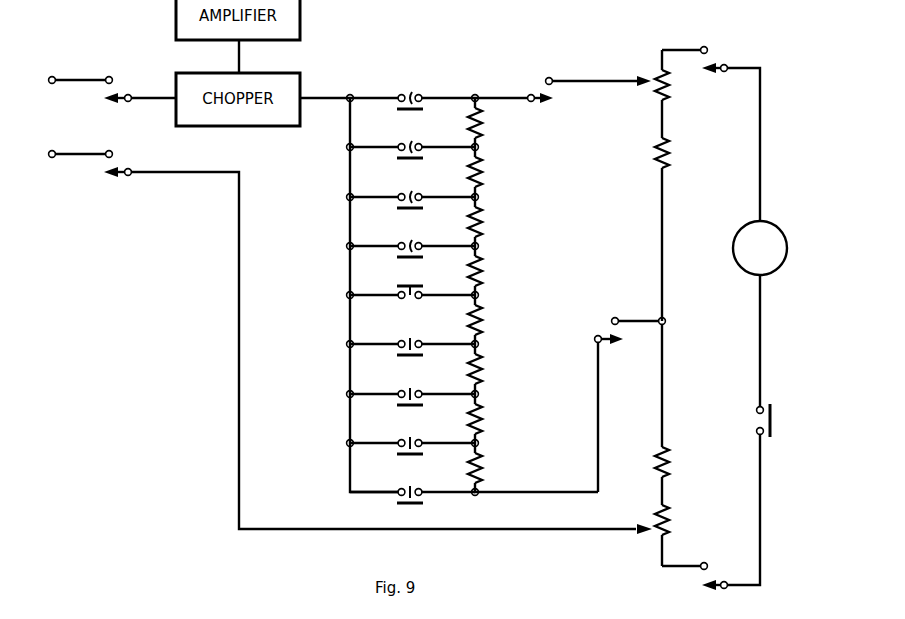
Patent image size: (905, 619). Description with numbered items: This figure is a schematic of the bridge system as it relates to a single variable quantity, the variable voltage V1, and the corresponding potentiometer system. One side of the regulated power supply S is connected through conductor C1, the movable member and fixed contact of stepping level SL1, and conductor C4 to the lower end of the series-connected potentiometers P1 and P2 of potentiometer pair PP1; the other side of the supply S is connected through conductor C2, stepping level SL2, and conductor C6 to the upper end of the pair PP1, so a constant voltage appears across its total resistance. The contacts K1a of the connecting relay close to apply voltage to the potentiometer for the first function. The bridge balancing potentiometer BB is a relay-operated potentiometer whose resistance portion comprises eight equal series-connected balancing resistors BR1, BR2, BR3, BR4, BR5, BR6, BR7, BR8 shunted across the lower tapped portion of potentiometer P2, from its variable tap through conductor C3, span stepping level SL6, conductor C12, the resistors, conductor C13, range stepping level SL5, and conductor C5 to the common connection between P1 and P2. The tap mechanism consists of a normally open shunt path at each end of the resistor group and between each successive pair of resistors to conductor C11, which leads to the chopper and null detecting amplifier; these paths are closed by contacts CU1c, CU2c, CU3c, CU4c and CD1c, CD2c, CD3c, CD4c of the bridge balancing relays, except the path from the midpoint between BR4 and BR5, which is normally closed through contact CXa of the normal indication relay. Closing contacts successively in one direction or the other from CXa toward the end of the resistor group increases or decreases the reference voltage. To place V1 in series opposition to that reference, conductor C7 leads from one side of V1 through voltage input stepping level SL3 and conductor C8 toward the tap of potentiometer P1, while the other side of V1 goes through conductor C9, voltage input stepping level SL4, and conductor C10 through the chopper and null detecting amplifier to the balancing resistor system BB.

The conductor C9 is at (78, 79).
The voltage input stepping level SL4 is at (113, 94).
The variable voltage V1 is at (50, 115).
The conductor C10 is at (154, 100).
The voltage input stepping level SL3 is at (113, 168).
The conductor C7 is at (76, 157).
The conductor C8 is at (238, 484).
The conductor C11 is at (321, 97).
The contact of relay CU4 CU4c is at (412, 91).
The contact of relay CU3 CU3c is at (412, 140).
The contact of relay CU2 CU2c is at (412, 190).
The contact of relay CU1 CU1c is at (412, 239).
The normally closed contact of normal indication relay CX CXa is at (412, 280).
The contact of relay CD1 CD1c is at (412, 337).
The contact of relay CD2 CD2c is at (412, 387).
The contact of relay CD3 CD3c is at (412, 436).
The contact of relay CD4 CD4c is at (412, 485).
The balancing resistor BR1 is at (484, 122).
The balancing resistor BR2 is at (484, 172).
The balancing resistor BR3 is at (484, 221).
The balancing resistor BR4 is at (484, 270).
The balancing resistor BR5 is at (484, 319).
The balancing resistor BR6 is at (484, 368).
The balancing resistor BR7 is at (484, 417).
The balancing resistor BR8 is at (484, 466).
The bridge balancing potentiometer BB is at (527, 304).
The conductor C12 is at (500, 97).
The span stepping level SL6 is at (556, 96).
The conductor C3 is at (599, 81).
The potentiometer P2 is at (671, 90).
The conductor C6 is at (684, 48).
The stepping level SL2 is at (718, 62).
The conductor C2 is at (759, 164).
The regulated power supply S is at (760, 248).
The conductor C1 is at (759, 527).
The contacts of connecting relay K1 K1a is at (756, 421).
The potentiometer pair PP1 is at (703, 329).
The conductor C5 is at (635, 318).
The range stepping level SL5 is at (604, 335).
The conductor C13 is at (600, 444).
The potentiometer P1 is at (671, 526).
The conductor C4 is at (679, 568).
The stepping level SL1 is at (707, 580).